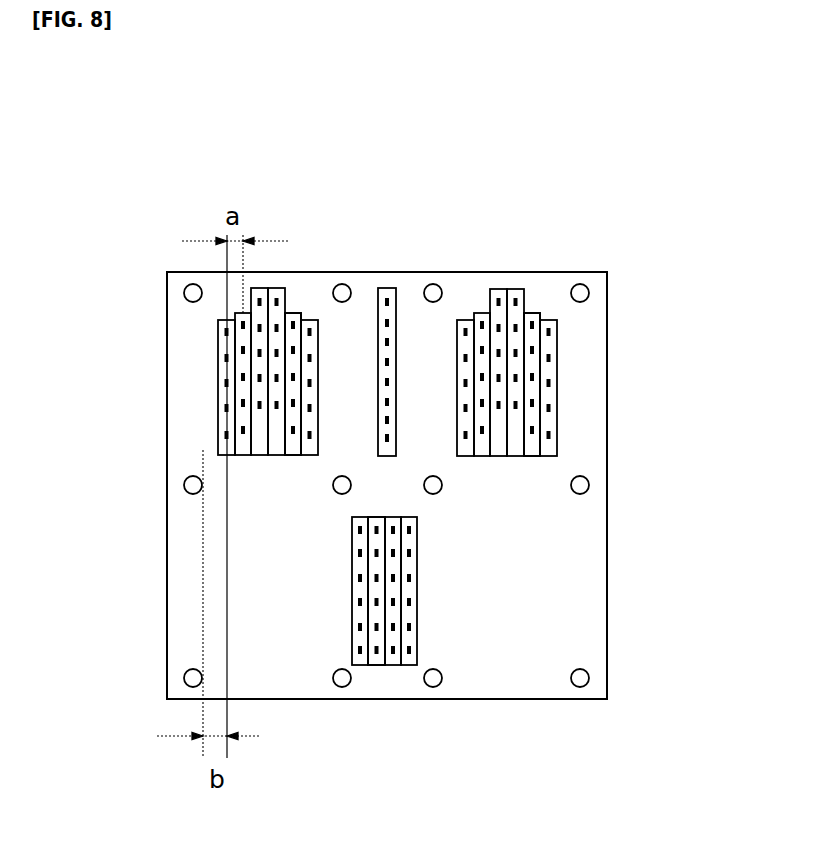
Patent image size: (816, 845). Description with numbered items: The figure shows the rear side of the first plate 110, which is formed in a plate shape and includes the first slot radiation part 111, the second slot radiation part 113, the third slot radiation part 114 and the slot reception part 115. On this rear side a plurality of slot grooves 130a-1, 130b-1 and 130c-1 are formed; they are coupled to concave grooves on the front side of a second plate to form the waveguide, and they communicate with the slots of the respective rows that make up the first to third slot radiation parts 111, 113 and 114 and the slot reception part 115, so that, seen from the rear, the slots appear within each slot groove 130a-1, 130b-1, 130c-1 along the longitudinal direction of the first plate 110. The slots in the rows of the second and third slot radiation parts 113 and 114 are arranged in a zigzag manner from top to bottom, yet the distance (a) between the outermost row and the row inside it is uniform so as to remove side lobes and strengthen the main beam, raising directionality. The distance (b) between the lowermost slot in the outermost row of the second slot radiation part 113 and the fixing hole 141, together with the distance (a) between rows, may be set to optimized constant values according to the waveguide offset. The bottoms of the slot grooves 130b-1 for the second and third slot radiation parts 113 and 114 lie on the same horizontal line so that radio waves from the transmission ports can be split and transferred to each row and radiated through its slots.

The first plate 110 is at (175, 138).
The first slot radiation part 111 is at (530, 302).
The second slot radiation part 113 is at (225, 357).
The third slot radiation part 114 is at (547, 410).
The slot reception part 115 is at (410, 625).
The fixing hole 141 is at (193, 676).
The slot groove 130a-1 is at (386, 288).
The slot groove 130b-1 is at (292, 313).
The slot groove 130c-1 is at (375, 665).